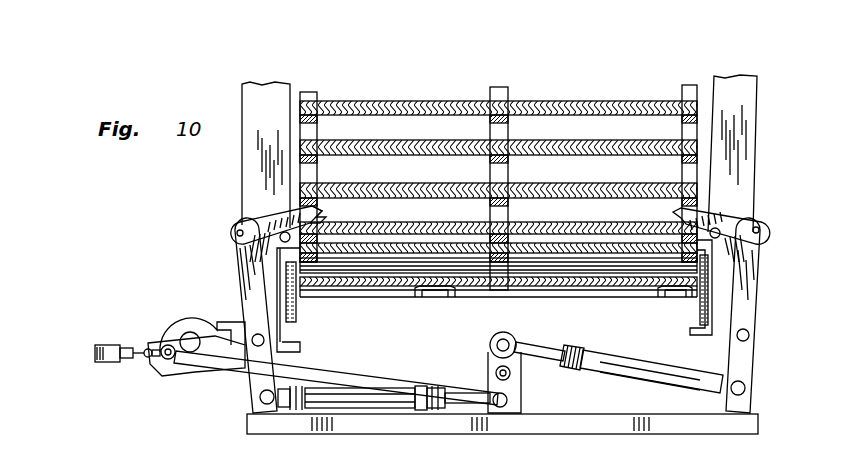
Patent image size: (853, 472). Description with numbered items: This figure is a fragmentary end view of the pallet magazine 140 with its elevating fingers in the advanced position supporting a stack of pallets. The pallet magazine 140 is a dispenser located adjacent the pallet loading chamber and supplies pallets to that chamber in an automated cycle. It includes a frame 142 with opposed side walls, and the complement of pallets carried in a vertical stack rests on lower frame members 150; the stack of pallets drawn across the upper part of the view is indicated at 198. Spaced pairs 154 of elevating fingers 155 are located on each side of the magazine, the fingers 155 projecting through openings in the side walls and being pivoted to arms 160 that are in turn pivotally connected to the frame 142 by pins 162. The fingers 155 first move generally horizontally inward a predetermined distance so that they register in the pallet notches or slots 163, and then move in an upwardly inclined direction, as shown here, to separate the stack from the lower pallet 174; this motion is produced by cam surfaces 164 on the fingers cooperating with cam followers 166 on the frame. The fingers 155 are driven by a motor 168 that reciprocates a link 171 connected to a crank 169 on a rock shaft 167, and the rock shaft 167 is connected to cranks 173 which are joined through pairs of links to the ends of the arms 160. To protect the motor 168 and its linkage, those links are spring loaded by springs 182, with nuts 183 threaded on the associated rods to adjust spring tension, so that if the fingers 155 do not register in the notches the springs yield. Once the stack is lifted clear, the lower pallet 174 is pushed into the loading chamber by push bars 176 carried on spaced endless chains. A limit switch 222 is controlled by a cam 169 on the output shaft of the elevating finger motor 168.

The pallet magazine 140 is at (772, 170).
The frame 142 is at (764, 383).
The lower frame members 150 is at (660, 290).
The spaced pairs of elevating fingers 154 is at (209, 230).
The elevating fingers 155 is at (278, 220).
The arms 160 is at (246, 280).
The pins 162 is at (264, 342).
The pallet notches or slots 163 is at (326, 217).
The cam surfaces 164 is at (728, 215).
The cam followers 166 is at (247, 259).
The rock shaft 167 is at (497, 372).
The motor 168 is at (190, 330).
The crank 169 is at (162, 370).
The link 171 is at (308, 372).
The cranks 173 is at (506, 389).
The lower pallet 174 is at (400, 282).
The push bars 176 is at (570, 258).
The springs 182 is at (436, 386).
The nuts 183 is at (295, 410).
The cross rods 198 is at (575, 103).
The limit switch 222 is at (115, 365).